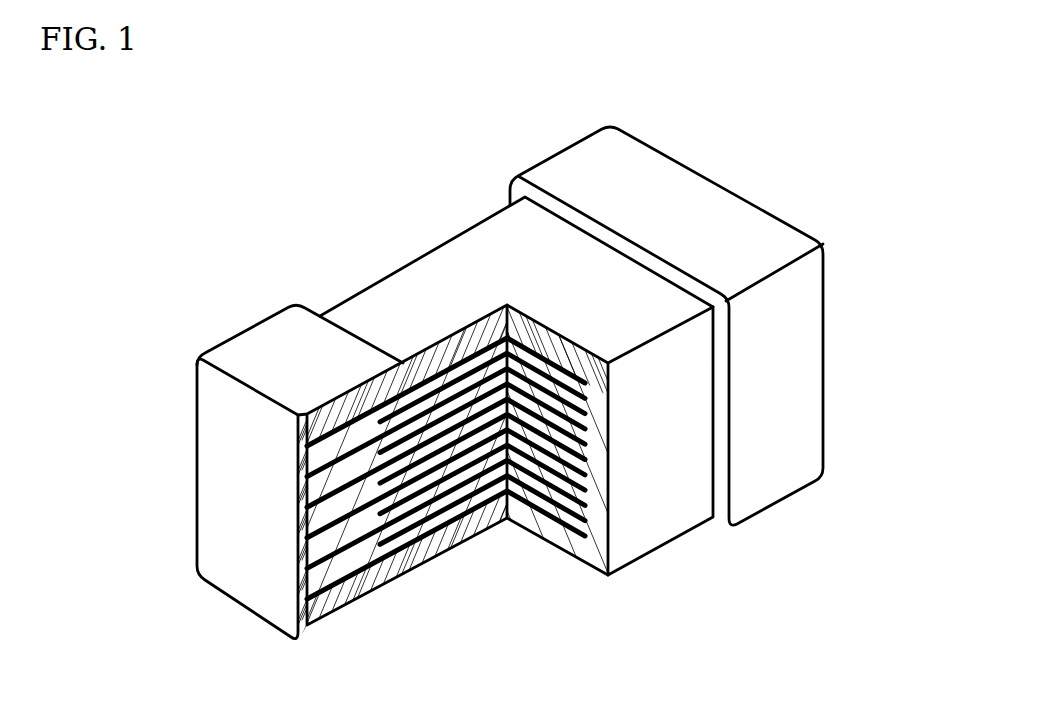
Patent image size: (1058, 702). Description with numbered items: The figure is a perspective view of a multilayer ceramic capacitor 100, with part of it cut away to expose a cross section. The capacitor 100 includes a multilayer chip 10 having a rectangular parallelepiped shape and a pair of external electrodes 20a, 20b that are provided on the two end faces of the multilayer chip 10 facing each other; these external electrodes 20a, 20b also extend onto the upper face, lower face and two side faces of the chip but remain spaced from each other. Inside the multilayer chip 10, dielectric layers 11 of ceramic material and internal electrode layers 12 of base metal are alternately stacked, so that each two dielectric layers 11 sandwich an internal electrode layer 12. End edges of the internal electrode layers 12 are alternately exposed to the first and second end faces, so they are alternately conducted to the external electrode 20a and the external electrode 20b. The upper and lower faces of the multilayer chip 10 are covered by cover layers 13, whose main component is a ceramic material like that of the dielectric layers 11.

The multilayer ceramic capacitor 100 is at (932, 55).
The multilayer chip 10 is at (463, 421).
The dielectric layer 11 is at (443, 567).
The internal electrode layer 12 is at (463, 497).
The cover layer 13 is at (477, 243).
The external electrode 20a is at (258, 325).
The external electrode 20b is at (567, 167).